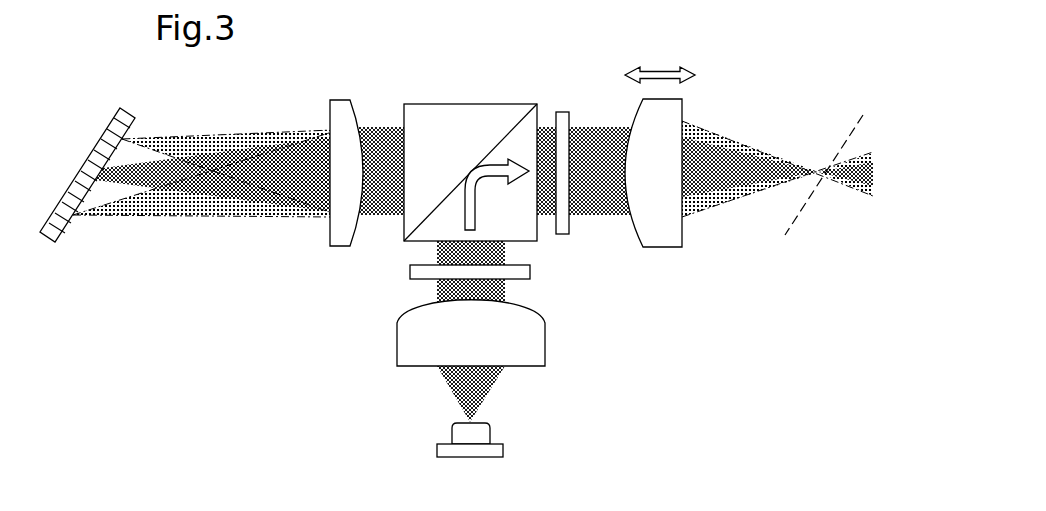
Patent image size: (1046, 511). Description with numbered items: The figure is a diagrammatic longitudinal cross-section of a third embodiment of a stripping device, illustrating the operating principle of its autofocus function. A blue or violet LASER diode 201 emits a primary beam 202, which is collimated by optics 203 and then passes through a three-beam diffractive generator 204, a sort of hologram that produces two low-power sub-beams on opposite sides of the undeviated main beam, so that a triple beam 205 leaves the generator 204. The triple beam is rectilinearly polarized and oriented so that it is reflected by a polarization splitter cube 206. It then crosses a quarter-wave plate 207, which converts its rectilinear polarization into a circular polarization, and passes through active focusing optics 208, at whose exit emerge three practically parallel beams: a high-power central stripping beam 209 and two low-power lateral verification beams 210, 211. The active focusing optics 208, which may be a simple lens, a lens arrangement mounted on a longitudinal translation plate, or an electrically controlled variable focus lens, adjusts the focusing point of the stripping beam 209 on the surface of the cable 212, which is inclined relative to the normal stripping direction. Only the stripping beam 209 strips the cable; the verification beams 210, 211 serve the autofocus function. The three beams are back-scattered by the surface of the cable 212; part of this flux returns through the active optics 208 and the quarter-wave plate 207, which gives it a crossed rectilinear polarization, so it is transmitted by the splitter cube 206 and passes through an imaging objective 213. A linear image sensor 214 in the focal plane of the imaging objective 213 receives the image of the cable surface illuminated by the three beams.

The LASER diode 201 is at (495, 450).
The primary beam 202 is at (482, 392).
The optics 203 is at (408, 342).
The three-beam diffractive generator 204 is at (417, 272).
The triple beam 205 is at (498, 252).
The polarization splitter cube 206 is at (463, 112).
The quarter-wave plate 207 is at (563, 110).
The active focusing optics 208 is at (670, 108).
The central stripping beam 209 is at (728, 157).
The lateral verification beam 210 is at (782, 153).
The lateral verification beam 211 is at (773, 197).
The cable 212 is at (854, 101).
The imaging objective 213 is at (345, 110).
The linear image sensor 214 is at (48, 244).